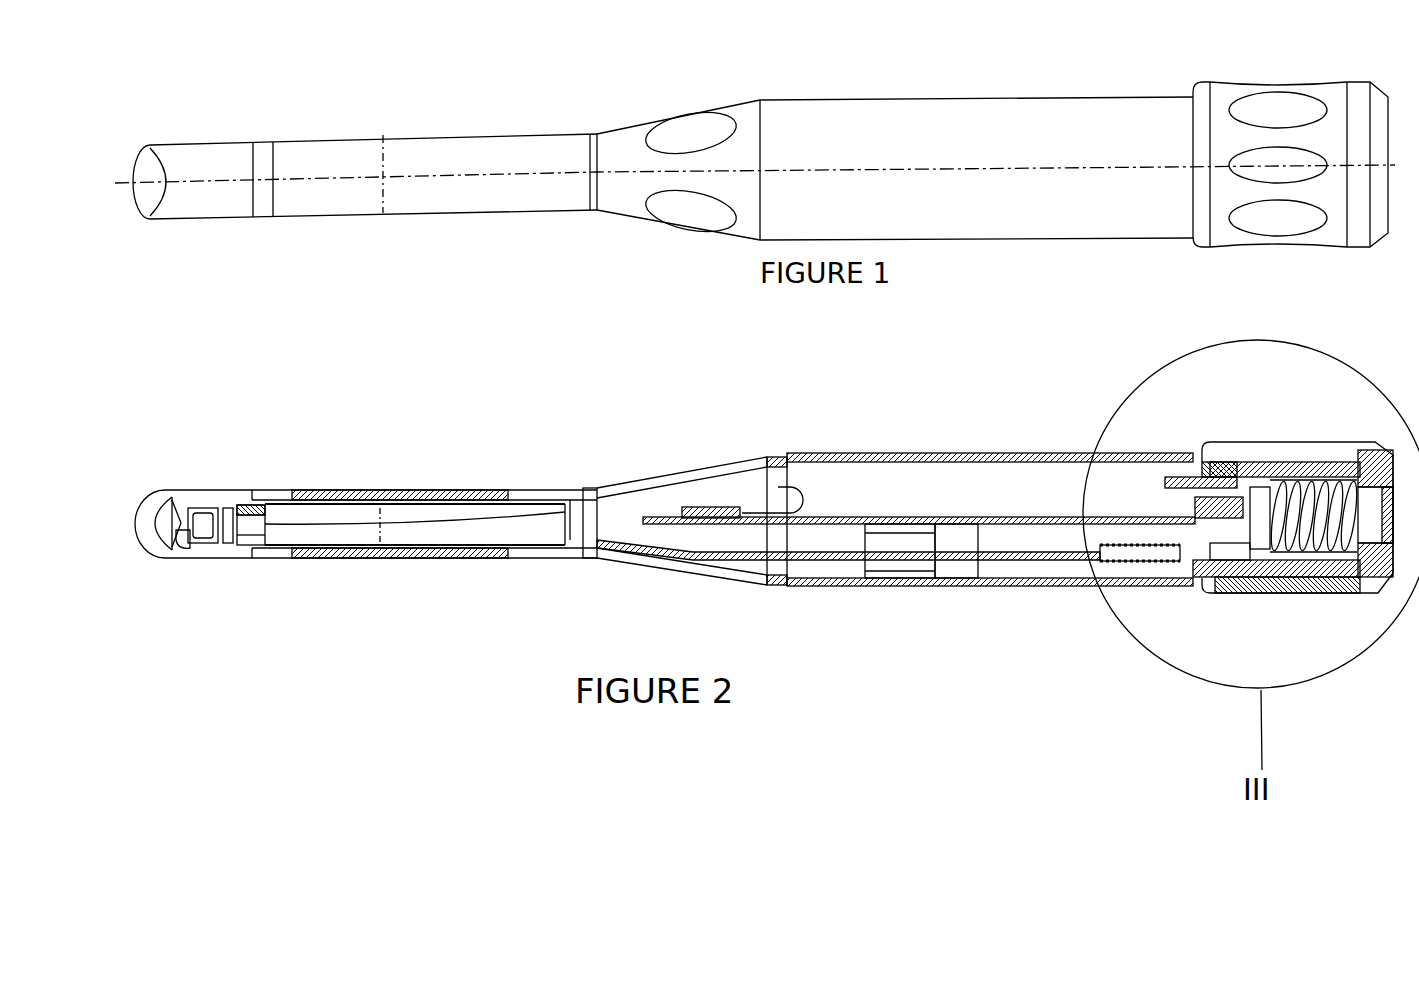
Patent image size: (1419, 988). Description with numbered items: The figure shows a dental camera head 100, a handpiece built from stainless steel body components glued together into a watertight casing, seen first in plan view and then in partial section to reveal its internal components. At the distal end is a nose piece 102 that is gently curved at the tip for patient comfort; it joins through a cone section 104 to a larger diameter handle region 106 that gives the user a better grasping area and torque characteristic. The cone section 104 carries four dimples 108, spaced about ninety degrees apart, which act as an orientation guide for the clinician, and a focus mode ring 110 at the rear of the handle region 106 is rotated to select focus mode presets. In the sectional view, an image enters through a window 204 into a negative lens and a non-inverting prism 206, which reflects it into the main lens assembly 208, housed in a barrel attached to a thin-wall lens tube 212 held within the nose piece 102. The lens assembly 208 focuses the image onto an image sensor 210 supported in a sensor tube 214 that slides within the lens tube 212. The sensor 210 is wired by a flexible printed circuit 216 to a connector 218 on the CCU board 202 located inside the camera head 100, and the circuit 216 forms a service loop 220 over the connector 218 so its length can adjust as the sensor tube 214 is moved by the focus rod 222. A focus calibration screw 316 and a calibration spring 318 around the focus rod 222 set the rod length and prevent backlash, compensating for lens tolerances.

In FIG. 1, the camera head 100 is at (715, 78).
In FIG. 2, the camera head 100 is at (500, 478).
In FIG. 1, the nose piece 102 is at (313, 212).
In FIG. 2, the nose piece 102 is at (428, 552).
In FIG. 1, the cone section 104 is at (730, 107).
In FIG. 2, the cone section 104 is at (690, 570).
In FIG. 1, the handle region 106 is at (1077, 236).
In FIG. 2, the handle region 106 is at (958, 455).
In FIG. 1, the dimples 108 is at (691, 137).
In FIG. 1, the focus mode ring 110 is at (1292, 243).
In FIG. 2, the focus mode ring 110 is at (1296, 444).
In FIG. 2, the CCU board 202 is at (980, 526).
In FIG. 2, the window 204 is at (190, 541).
In FIG. 2, the non-inverting prism 206 is at (178, 525).
In FIG. 2, the main lens assembly 208 is at (180, 543).
In FIG. 2, the image sensor 210 is at (248, 546).
In FIG. 2, the lens tube 212 is at (322, 552).
In FIG. 2, the sensor tube 214 is at (548, 558).
In FIG. 2, the flexible printed circuit 216 is at (657, 496).
In FIG. 2, the connector 218 is at (712, 508).
In FIG. 2, the service loop 220 is at (806, 484).
In FIG. 2, the focus rod 222 is at (833, 558).
In FIG. 2, the focus calibration screw 316 is at (1230, 548).
In FIG. 2, the calibration spring 318 is at (1127, 562).